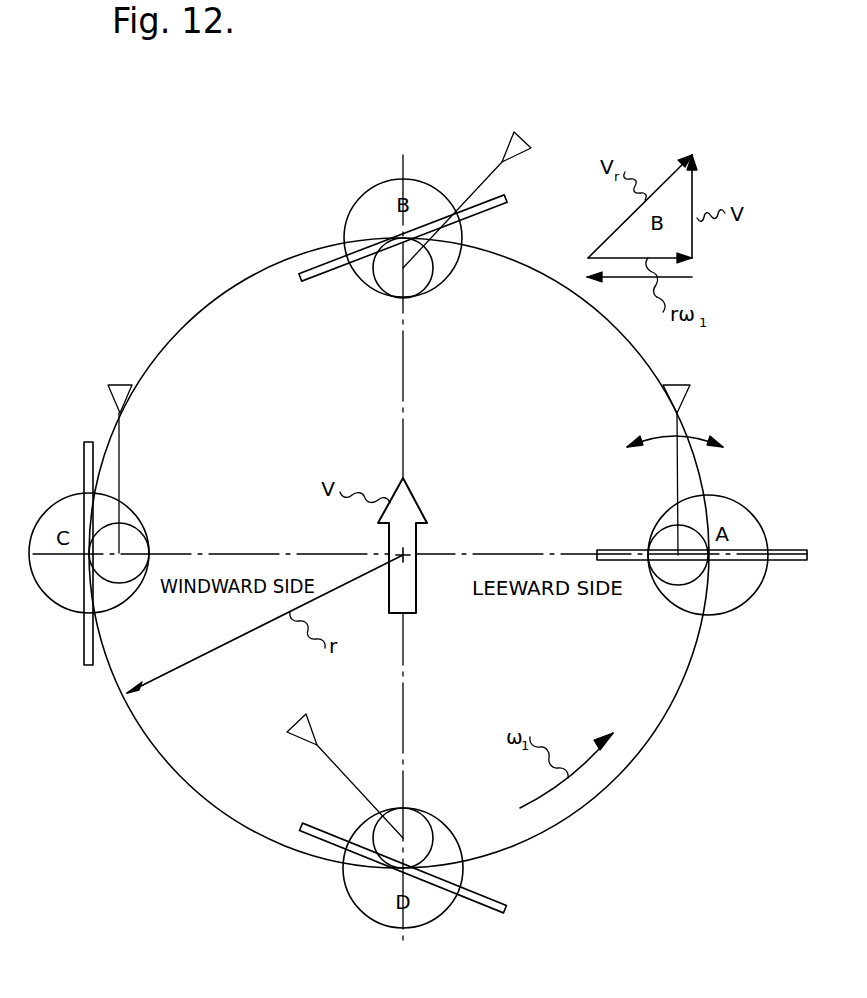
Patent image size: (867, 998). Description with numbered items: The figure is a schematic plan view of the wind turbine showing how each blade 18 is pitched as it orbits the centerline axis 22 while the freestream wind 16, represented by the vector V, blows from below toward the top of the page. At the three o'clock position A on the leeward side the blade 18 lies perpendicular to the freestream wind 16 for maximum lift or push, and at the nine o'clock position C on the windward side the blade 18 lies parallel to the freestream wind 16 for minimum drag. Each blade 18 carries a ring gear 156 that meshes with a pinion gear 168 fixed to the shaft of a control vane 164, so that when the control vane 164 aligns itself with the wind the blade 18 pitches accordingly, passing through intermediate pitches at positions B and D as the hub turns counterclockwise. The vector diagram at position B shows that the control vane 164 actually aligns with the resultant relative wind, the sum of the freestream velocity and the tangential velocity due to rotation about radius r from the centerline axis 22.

The freestream wind 16 is at (417, 585).
The blade 18 is at (80, 456).
The centerline axis 22 is at (408, 552).
The ring gear 156 is at (57, 604).
The control vane 164 is at (505, 150).
The pinion gear 168 is at (127, 523).